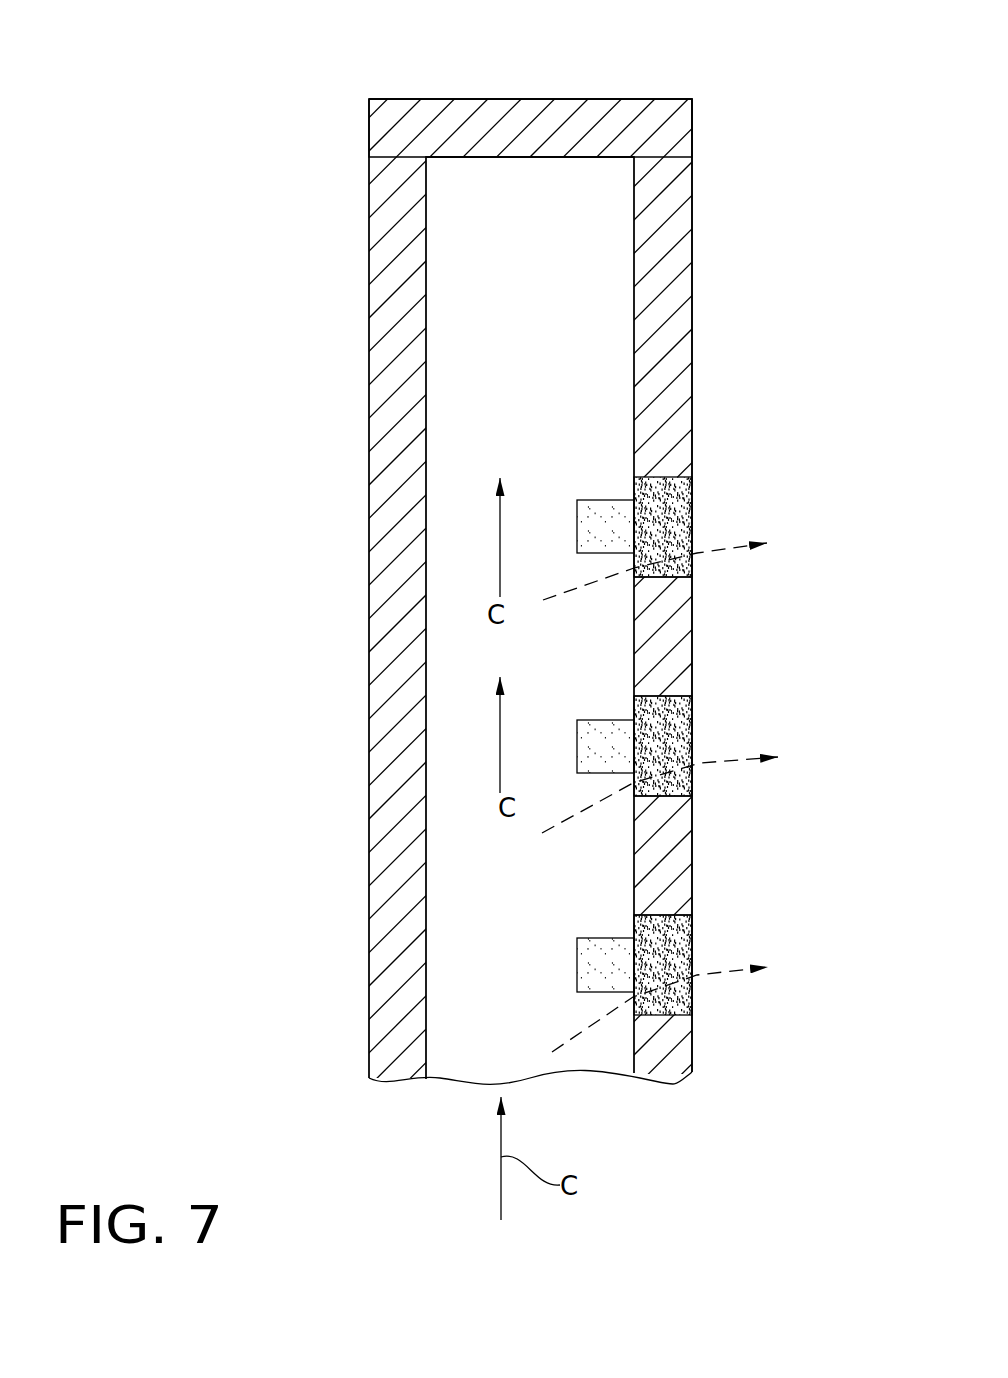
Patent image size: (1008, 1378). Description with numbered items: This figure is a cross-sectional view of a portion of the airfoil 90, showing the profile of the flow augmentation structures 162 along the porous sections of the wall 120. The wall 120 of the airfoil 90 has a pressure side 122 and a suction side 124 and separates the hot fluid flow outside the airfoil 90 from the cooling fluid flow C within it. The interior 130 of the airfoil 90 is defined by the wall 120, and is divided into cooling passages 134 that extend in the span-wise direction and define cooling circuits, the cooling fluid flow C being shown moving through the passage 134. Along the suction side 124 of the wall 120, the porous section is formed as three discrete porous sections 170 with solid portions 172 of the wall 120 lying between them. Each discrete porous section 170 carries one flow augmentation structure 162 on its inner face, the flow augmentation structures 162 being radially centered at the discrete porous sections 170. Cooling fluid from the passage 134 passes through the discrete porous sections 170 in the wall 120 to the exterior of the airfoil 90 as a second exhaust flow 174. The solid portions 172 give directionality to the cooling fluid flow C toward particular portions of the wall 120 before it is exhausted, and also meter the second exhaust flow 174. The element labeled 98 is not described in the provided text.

The airfoil 90 is at (323, 63).
The liner wall 98 is at (546, 99).
The wall 120 is at (700, 188).
The pressure side 122 is at (368, 467).
The suction side 124 is at (692, 285).
The interior 130 is at (487, 347).
The cooling passage 134 is at (557, 255).
The flow augmentation structure 162 is at (592, 500).
The discrete porous section 170 is at (690, 733).
The solid portion 172 is at (690, 507).
The second exhaust flow 174 is at (703, 555).